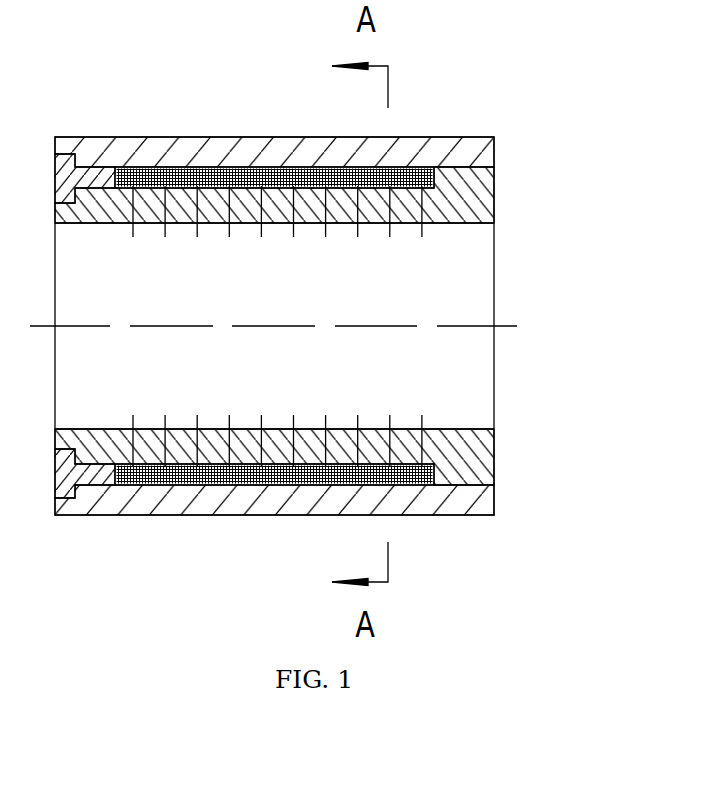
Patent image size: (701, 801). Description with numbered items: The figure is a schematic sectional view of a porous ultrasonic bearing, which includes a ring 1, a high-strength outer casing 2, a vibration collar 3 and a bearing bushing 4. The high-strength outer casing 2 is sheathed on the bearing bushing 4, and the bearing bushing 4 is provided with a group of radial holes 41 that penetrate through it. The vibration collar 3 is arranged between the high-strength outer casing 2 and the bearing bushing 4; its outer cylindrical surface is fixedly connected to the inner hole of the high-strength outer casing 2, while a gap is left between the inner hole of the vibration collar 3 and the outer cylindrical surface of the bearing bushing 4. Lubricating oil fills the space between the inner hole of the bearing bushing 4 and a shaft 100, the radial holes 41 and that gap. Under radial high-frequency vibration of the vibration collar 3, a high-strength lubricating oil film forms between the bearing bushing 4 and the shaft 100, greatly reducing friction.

The shaft 100 is at (493, 295).
The ring 1 is at (87, 170).
The high-strength outer casing 2 is at (164, 150).
The vibration collar 3 is at (212, 175).
The bearing bushing 4 is at (461, 198).
The radial holes 41 is at (266, 175).